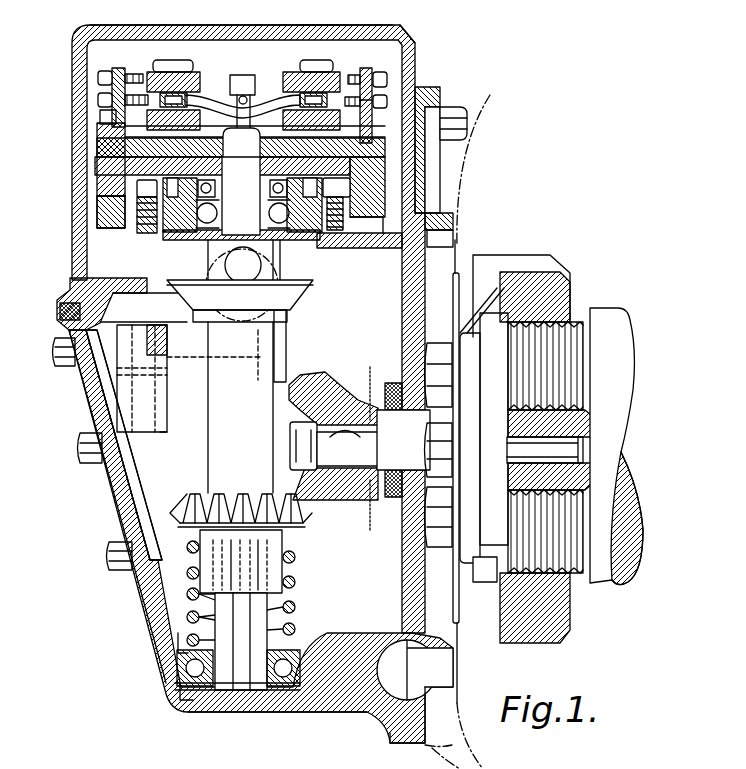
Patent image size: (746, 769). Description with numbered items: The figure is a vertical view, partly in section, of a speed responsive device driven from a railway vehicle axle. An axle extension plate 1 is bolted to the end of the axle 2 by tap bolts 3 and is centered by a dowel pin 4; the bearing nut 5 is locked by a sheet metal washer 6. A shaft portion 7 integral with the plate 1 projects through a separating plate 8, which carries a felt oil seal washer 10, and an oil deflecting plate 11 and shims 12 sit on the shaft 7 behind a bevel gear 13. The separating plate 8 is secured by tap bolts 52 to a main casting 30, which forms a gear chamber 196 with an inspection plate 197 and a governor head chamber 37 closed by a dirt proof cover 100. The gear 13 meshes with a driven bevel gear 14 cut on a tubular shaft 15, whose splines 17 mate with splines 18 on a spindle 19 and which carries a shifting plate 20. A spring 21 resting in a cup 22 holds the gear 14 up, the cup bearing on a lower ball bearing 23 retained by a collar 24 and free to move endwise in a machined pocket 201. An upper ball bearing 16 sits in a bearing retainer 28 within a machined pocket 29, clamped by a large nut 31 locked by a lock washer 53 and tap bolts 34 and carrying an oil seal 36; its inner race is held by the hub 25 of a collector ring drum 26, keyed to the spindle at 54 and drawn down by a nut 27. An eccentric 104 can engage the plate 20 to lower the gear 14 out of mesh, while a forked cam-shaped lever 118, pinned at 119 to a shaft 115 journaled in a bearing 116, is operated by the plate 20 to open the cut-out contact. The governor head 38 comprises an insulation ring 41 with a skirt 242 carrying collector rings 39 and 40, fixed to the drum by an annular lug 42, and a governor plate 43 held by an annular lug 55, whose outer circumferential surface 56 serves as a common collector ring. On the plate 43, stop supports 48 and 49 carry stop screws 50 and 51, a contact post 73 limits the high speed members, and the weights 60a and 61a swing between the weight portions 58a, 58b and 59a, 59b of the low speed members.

The axle extension plate 1 is at (485, 569).
The axle 2 is at (600, 588).
The tap bolts 3 is at (440, 474).
The dowel pin 4 is at (492, 490).
The bearing nut 5 is at (529, 256).
The sheet metal washer 6 is at (488, 297).
The shaft portion 7 is at (360, 490).
The separating plate 8 is at (425, 712).
The felt oil seal washer 10 is at (392, 516).
The oil deflecting plate 11 is at (368, 520).
The shims 12 is at (373, 400).
The bevel gear 13 is at (326, 390).
The bevel gear 14 is at (181, 510).
The tubular shaft 15 is at (210, 457).
The upper ball bearing 16 is at (282, 243).
The splines 17 is at (262, 575).
The splines 18 is at (278, 610).
The spindle 19 is at (240, 706).
The shifting plate 20 is at (300, 300).
The spring 21 is at (187, 570).
The cup 22 is at (178, 633).
The lower ball bearing 23 is at (180, 665).
The collar 24 is at (190, 714).
The hub 25 is at (268, 208).
The collector ring drum 26 is at (441, 240).
The nut 27 is at (243, 101).
The bearing retainer 28 is at (308, 243).
The machined pocket 29 is at (206, 250).
The main casting 30 is at (372, 249).
The nut 31 is at (140, 226).
The tap bolts 34 is at (135, 190).
The oil seal 36 is at (266, 188).
The governor head chamber 37 is at (318, 40).
The governor head 38 is at (365, 84).
The collector ring 39 is at (95, 165).
The collector ring 40 is at (97, 211).
The insulation ring 41 is at (97, 147).
The annular lug 42 is at (241, 142).
The governor plate 43 is at (97, 128).
The stop support 48 is at (114, 74).
The stop support 49 is at (408, 42).
The stop screws 50 is at (98, 76).
The stop screws 51 is at (98, 99).
The tap bolts 52 is at (463, 108).
The lock washer 53 is at (97, 200).
The key 54 is at (258, 178).
The annular lug 55 is at (105, 140).
The outer circumferential surface 56 is at (374, 106).
The governor weight portion 58a is at (150, 74).
The governor weight portion 58b is at (233, 110).
The governor weight portion 59a is at (335, 72).
The governor weight portion 59b is at (280, 100).
The governor weight 60a is at (200, 88).
The governor weight 61a is at (290, 95).
The contact post 73 is at (252, 75).
The dirt proof cover 100 is at (82, 32).
The eccentric 104 is at (212, 274).
The shaft 115 is at (160, 432).
The bearing 116 is at (160, 413).
The forked cam-shaped lever 118 is at (160, 343).
The pin 119 is at (160, 380).
The gear chamber 196 is at (135, 487).
The inspection plate 197 is at (120, 512).
The machined pocket 201 is at (178, 690).
The skirt 242 is at (97, 224).